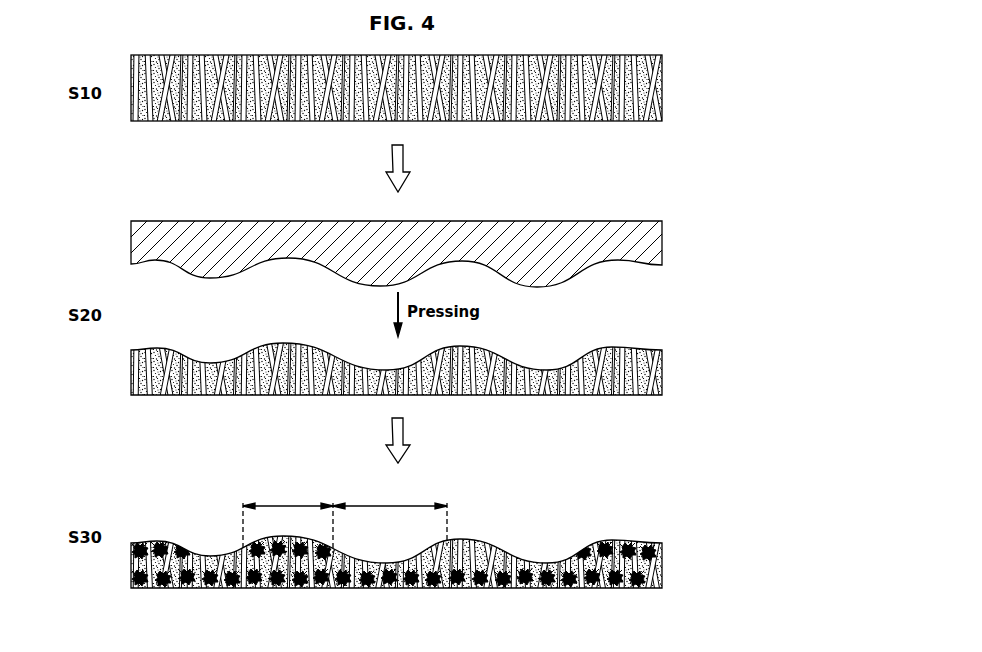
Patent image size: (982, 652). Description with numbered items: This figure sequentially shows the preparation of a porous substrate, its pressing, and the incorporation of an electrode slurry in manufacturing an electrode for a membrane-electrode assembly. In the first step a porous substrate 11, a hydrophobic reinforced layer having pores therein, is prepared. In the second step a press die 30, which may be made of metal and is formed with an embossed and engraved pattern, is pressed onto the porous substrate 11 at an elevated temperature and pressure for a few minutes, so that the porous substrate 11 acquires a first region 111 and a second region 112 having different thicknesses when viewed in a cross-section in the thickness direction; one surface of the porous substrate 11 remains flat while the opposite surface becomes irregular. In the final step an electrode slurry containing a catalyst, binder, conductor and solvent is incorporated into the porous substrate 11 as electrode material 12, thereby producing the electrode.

The porous substrate 11 is at (662, 93).
The electrode material 12 is at (633, 588).
The press die 30 is at (662, 243).
The first region 111 is at (288, 521).
The second region 112 is at (390, 517).